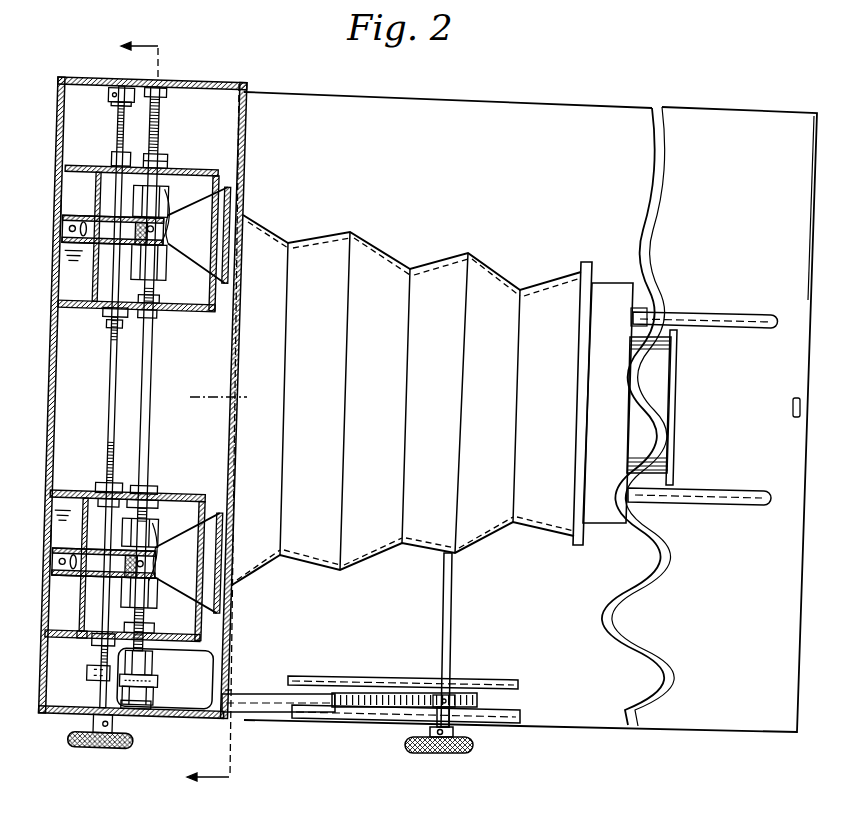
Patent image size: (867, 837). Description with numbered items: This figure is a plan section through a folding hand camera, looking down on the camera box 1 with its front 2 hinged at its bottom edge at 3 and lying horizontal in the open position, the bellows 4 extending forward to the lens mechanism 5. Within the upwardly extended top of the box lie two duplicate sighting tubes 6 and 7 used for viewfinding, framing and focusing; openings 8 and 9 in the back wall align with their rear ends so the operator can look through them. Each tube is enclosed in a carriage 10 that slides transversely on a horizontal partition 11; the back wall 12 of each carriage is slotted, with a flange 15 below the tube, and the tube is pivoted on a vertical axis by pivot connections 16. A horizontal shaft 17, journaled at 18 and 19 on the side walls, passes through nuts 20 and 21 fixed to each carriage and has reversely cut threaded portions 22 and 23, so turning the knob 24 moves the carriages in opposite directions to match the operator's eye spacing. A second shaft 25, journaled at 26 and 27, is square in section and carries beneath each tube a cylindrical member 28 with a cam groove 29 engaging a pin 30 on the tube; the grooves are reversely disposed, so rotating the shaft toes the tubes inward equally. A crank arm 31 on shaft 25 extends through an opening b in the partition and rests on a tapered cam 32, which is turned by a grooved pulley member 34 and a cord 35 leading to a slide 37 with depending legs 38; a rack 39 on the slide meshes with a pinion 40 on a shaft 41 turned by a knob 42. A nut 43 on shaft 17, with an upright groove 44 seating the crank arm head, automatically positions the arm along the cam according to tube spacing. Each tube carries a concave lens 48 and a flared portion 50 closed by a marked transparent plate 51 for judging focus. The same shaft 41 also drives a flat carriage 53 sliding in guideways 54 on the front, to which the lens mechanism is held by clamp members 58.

The camera box 1 is at (70, 77).
The front of the camera box 2 is at (542, 115).
The hinge connection 3 is at (282, 82).
The bellows 4 is at (383, 268).
The lens mechanism 5 is at (670, 337).
The sighting tube 6 is at (84, 215).
The sighting tube 7 is at (79, 548).
The opening 8 is at (62, 213).
The opening 9 is at (56, 545).
The carriage 10 is at (198, 163).
The horizontal partition 11 is at (230, 372).
The back wall of the carriage 12 is at (105, 311).
The horizontal flange 15 is at (70, 280).
The pivot connections 16 is at (68, 229).
The horizontal shaft 17 is at (118, 392).
The journal 18 is at (110, 90).
The journal 19 is at (80, 712).
The nut 20 is at (114, 152).
The nut 21 is at (110, 332).
The screw threaded portion 22 is at (126, 140).
The screw threaded portion 23 is at (116, 472).
The knob 24 is at (107, 748).
The horizontal shaft 25 is at (160, 378).
The journal 26 is at (182, 83).
The journal 27 is at (138, 707).
The cylindrical member 28 is at (168, 280).
The cam groove 29 is at (172, 205).
The pin 30 is at (158, 230).
The crank arm 31 is at (176, 686).
The cam 32 is at (164, 664).
The grooved pulley member 34 is at (160, 700).
The cord 35 is at (270, 712).
The slide 37 is at (387, 693).
The depending leg portions 38 is at (330, 687).
The rack 39 is at (357, 714).
The pinion 40 is at (455, 692).
The horizontal shaft 41 is at (452, 618).
The knob 42 is at (448, 755).
The nut 43 is at (97, 673).
The upright groove 44 is at (93, 637).
The concave lens 48 is at (138, 228).
The flared portion 50 is at (230, 185).
The transparent plate 51 is at (234, 204).
The carriage 53 is at (676, 403).
The guideways 54 is at (745, 319).
The clamp members 58 is at (150, 705).
The opening b is at (226, 689).